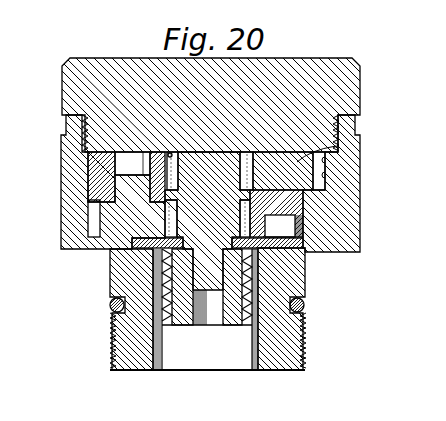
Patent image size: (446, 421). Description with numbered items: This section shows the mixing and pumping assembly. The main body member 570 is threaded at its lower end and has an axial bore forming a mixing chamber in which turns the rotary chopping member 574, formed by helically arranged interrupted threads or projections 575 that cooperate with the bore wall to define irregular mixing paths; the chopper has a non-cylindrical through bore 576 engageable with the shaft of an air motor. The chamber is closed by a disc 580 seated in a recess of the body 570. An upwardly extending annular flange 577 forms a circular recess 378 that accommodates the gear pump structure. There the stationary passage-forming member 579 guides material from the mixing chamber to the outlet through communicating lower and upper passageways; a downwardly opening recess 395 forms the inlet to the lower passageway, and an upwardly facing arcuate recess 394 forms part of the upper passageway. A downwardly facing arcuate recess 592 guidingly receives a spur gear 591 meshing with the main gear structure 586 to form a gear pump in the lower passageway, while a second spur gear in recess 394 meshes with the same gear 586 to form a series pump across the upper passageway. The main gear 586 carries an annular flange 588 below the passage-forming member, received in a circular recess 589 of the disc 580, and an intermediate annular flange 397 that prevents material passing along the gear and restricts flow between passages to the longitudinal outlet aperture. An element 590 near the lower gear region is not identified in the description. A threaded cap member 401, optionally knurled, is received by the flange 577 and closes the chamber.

The threaded cap member 401 is at (334, 70).
The inlet recess 395 is at (336, 146).
The upper arcuate recess 394 is at (329, 161).
The circular recess 378 is at (327, 176).
The annular flange 577 is at (348, 194).
The intermediate annular flange 397 is at (283, 194).
The lower arcuate recess 592 is at (100, 207).
The lower spur gear 591 is at (118, 217).
The main gear structure 586 is at (238, 215).
The passage-forming member 579 is at (321, 217).
The disc 580 is at (150, 248).
The annular flange 588 is at (200, 271).
The nut 590 is at (200, 283).
The circular recess of disc 589 is at (246, 256).
The main body member 570 is at (287, 280).
The interrupted thread projections 575 is at (292, 311).
The non-cylindrical through bore 576 is at (226, 326).
The rotary chopping member 574 is at (185, 340).